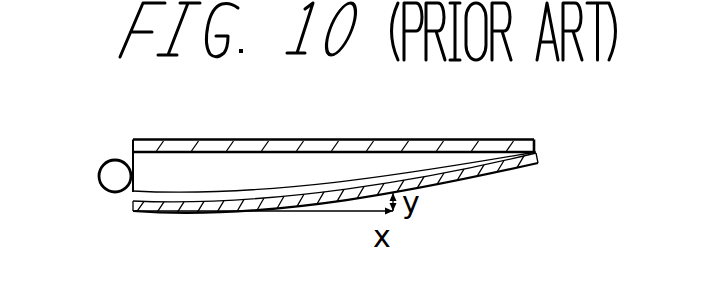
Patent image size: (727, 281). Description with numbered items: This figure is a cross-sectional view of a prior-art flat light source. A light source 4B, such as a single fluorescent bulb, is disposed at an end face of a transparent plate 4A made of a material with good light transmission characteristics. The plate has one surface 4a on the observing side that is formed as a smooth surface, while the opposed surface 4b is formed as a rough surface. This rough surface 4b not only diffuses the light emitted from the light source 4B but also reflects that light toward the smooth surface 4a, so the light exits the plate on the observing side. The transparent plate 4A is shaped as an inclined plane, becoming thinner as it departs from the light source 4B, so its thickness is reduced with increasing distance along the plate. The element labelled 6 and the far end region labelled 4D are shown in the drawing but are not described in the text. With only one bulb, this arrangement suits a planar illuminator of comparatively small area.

The fixed electrode plate 6 is at (255, 147).
The smooth surface 4a is at (395, 147).
The transparent plate 4A is at (180, 182).
The light source 4B is at (104, 184).
The rough surface 4b is at (425, 188).
The tip of lower plate 4D is at (514, 170).